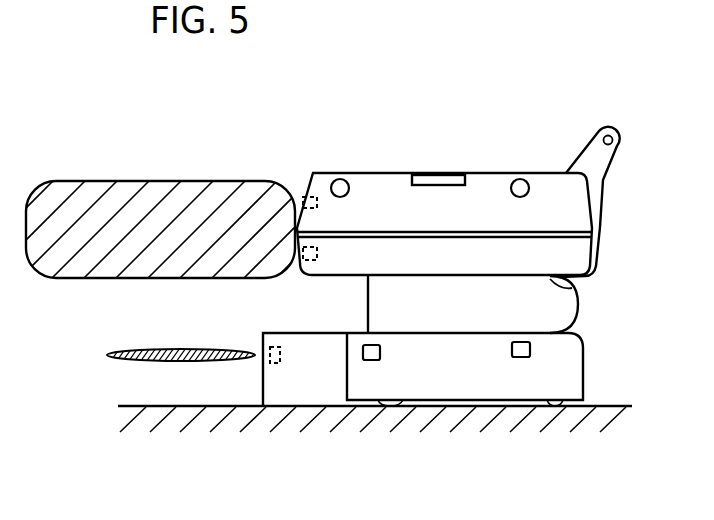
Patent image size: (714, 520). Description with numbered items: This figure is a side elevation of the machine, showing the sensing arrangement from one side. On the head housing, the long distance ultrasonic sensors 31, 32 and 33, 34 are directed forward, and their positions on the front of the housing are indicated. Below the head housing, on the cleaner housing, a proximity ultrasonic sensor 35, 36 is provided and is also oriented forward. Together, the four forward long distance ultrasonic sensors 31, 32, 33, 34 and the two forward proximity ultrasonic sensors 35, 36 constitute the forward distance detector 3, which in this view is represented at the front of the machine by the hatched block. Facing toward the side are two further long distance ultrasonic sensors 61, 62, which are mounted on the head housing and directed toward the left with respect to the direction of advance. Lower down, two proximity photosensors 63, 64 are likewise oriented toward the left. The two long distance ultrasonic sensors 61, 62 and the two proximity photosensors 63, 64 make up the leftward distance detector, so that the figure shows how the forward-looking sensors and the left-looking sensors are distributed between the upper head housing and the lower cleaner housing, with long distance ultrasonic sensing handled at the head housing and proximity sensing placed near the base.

The forward distance detector 3 is at (255, 182).
The long distance ultrasonic sensor 31 is at (312, 172).
The long distance ultrasonic sensor 32 is at (310, 202).
The long distance ultrasonic sensor 33 is at (307, 258).
The long distance ultrasonic sensor 34 is at (310, 253).
The proximity ultrasonic sensor 35 is at (268, 364).
The proximity ultrasonic sensor 36 is at (275, 355).
The long distance ultrasonic sensor 61 is at (347, 182).
The long distance ultrasonic sensor 62 is at (521, 180).
The proximity photosensor 63 is at (371, 360).
The proximity photosensor 64 is at (521, 357).